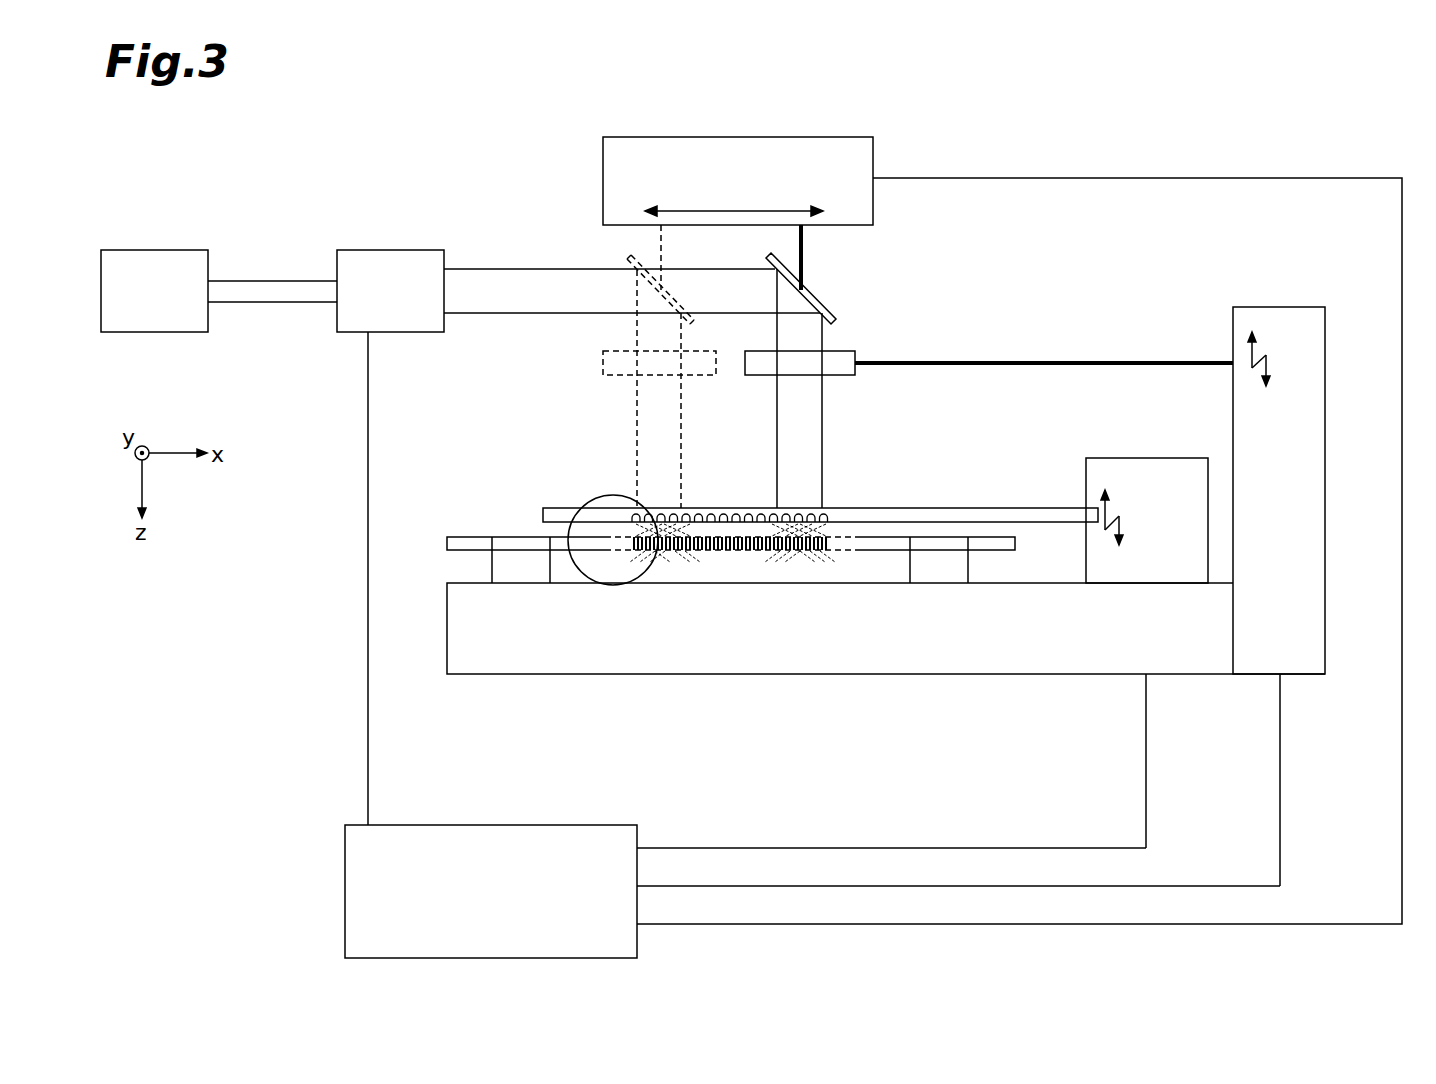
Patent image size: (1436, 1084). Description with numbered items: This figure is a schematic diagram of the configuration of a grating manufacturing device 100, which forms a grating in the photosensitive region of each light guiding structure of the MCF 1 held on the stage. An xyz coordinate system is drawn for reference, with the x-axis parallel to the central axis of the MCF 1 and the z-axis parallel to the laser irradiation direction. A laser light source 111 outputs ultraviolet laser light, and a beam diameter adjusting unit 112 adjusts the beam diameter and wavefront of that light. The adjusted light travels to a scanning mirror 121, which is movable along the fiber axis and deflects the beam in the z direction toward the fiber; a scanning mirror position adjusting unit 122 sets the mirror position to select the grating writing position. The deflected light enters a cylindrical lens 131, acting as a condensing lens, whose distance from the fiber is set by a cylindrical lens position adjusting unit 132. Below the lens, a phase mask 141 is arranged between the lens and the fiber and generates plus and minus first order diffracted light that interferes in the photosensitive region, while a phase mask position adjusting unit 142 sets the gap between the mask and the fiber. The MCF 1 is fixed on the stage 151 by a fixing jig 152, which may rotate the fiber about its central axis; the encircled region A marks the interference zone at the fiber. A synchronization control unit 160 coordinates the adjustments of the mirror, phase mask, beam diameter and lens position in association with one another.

The grating manufacturing device 100 is at (1164, 163).
The laser light source 111 is at (160, 250).
The beam diameter adjusting unit 112 is at (389, 250).
The scanning mirror 121 is at (818, 300).
The scanning mirror position adjusting unit 122 is at (603, 153).
The cylindrical lens 131 is at (856, 352).
The cylindrical lens position adjusting unit 132 is at (1283, 307).
The phase mask 141 is at (905, 512).
The phase mask position adjusting unit 142 is at (1158, 458).
The stage 151 is at (1000, 660).
The fixing jig 152 is at (522, 548).
The synchronization control unit 160 is at (345, 906).
The MCF 1 is at (447, 538).
The region A (enlarged portion) A is at (604, 496).